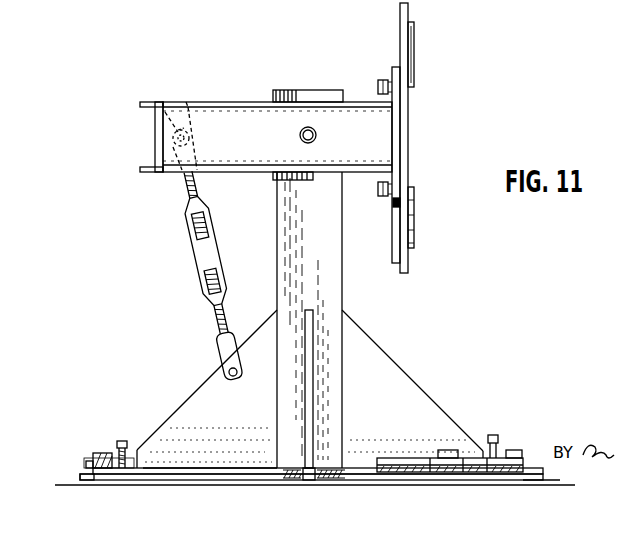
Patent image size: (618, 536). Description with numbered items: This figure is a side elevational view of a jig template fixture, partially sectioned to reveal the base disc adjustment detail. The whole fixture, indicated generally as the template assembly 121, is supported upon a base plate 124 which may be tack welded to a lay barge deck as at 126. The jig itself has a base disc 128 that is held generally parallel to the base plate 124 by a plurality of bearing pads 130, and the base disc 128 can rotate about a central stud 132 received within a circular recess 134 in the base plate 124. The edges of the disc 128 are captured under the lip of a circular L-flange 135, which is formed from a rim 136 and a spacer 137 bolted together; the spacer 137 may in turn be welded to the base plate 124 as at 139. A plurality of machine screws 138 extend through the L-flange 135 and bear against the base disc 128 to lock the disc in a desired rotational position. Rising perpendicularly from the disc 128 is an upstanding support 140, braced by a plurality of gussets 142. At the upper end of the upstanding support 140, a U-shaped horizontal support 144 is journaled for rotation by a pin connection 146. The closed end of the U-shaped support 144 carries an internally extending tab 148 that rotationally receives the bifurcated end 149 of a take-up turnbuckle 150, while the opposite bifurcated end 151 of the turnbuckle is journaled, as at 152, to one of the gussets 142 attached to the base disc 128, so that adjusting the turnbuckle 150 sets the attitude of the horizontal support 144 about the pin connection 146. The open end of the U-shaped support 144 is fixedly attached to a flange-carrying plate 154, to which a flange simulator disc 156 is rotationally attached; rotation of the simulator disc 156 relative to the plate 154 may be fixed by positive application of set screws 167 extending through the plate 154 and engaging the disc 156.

The base assembly 121 is at (178, 391).
The base plate 124 is at (547, 470).
The tack weld 126 is at (559, 479).
The base disc 128 is at (172, 467).
The bearing pads 130 is at (118, 480).
The central stud 132 is at (313, 482).
The circular recess 134 is at (295, 481).
The circular L-flange 135 is at (78, 440).
The rim 136 is at (108, 452).
The spacer 137 is at (93, 462).
The machine screws 138 is at (127, 441).
The weld 139 is at (81, 478).
The upstanding support 140 is at (343, 270).
The gussets 142 is at (314, 318).
The U-shaped horizontal support 144 is at (163, 96).
The pin connection 146 is at (317, 135).
The internally extending tab 148 is at (186, 102).
The bifurcated end 149 is at (197, 148).
The take-up turnbuckle 150 is at (199, 272).
The opposite bifurcated end 151 is at (222, 357).
The journal 152 is at (238, 373).
The flange-carrying plate 154 is at (393, 72).
The flange simulator disc 156 is at (410, 14).
The set screws 167 is at (377, 89).